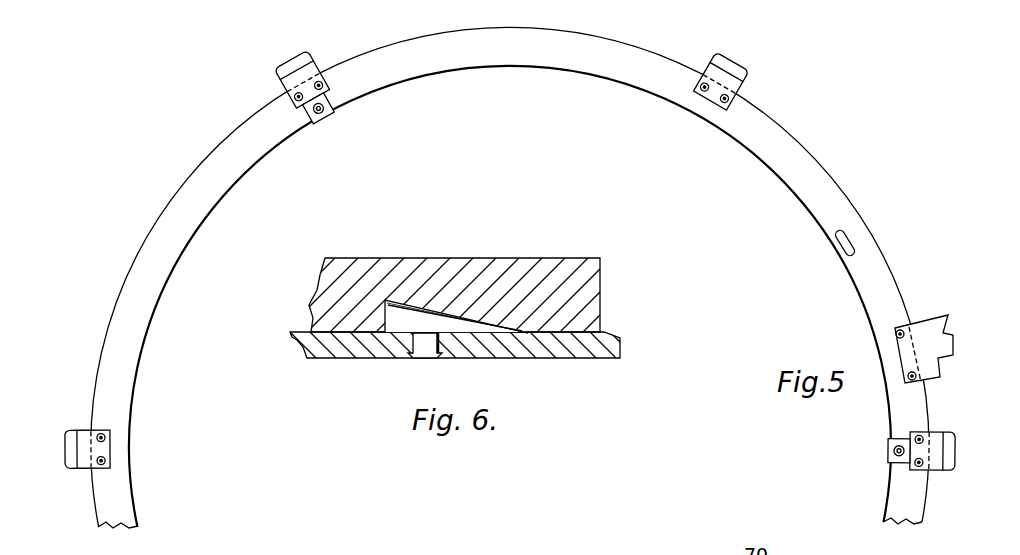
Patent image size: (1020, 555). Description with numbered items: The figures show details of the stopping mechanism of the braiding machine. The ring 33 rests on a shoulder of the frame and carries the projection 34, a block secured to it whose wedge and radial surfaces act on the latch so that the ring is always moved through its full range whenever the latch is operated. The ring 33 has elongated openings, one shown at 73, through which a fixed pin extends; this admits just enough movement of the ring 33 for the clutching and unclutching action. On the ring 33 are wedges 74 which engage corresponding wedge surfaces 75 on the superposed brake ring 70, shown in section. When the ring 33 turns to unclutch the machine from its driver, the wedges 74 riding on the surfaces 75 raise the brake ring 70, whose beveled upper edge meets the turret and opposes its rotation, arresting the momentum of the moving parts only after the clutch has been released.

In FIG. 5, the ring 33 is at (128, 390).
In FIG. 6, the ring 33 is at (572, 357).
In FIG. 5, the projection 34 is at (942, 348).
In FIG. 6, the brake ring 70 is at (526, 258).
In FIG. 5, the elongated opening 73 is at (846, 232).
In FIG. 6, the wedge 74 is at (456, 316).
In FIG. 6, the wedge surface 75 is at (468, 308).